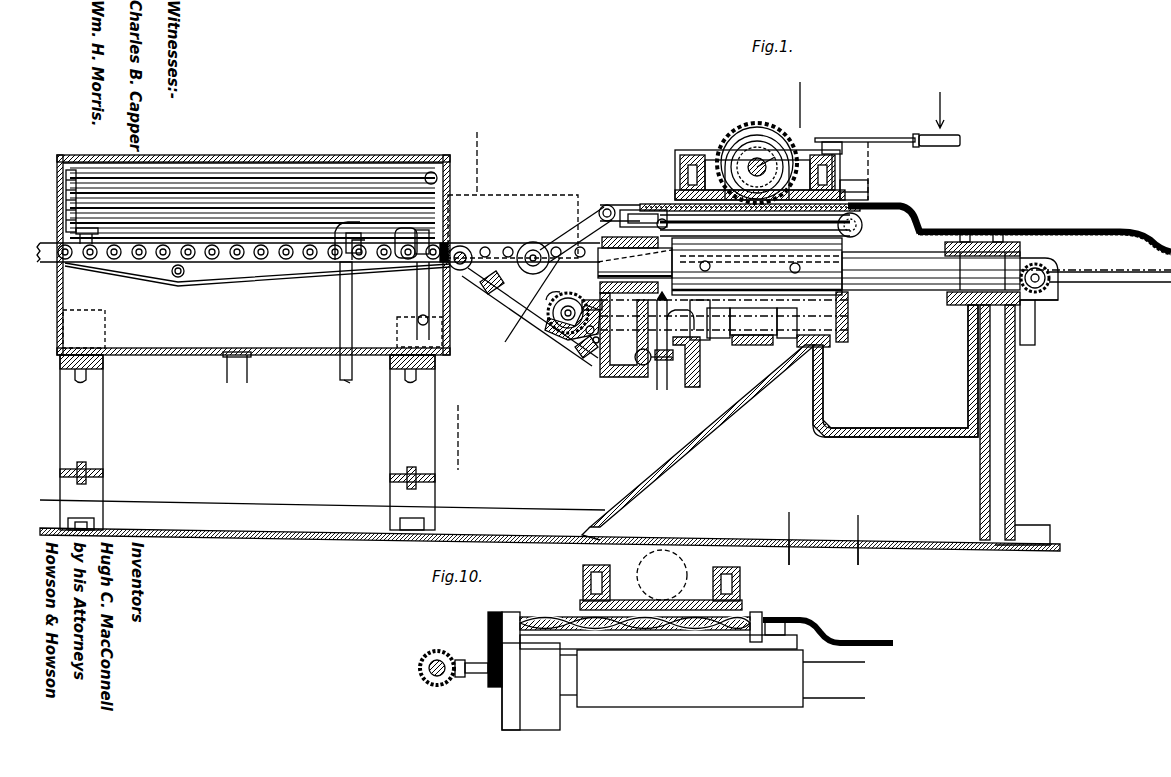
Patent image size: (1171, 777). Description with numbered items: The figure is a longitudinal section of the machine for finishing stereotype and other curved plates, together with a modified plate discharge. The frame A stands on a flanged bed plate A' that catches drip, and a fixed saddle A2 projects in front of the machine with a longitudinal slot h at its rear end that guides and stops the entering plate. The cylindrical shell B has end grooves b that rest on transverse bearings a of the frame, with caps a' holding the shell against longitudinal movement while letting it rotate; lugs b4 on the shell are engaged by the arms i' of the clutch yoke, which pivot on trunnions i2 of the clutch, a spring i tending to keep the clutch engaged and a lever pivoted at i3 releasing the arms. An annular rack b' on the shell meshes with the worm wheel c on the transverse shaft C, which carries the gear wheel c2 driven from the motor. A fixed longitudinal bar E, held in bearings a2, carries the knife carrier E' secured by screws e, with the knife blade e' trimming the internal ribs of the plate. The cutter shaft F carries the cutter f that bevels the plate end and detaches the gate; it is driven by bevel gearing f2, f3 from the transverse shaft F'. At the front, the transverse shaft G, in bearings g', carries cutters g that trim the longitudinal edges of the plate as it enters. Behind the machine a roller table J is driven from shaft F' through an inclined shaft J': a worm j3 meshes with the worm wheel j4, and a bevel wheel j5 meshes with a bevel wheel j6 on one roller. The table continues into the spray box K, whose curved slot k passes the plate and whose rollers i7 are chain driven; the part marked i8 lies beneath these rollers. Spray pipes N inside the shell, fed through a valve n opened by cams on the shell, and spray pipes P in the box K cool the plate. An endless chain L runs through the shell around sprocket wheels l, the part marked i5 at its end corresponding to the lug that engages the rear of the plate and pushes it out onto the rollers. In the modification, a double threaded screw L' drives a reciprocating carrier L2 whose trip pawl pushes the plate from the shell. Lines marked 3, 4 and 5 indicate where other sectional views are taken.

In FIG. 1, the frame A is at (555, 425).
In FIG. 1, the flanged bed plate A' is at (550, 525).
In FIG. 1, the fixed saddle A2 is at (1044, 229).
In FIG. 1, the cylindrical shell B is at (748, 175).
In FIG. 1, the transverse shaft C is at (790, 152).
In FIG. 1, the worm wheel c is at (760, 160).
In FIG. 1, the gear wheel c2 is at (740, 128).
In FIG. 1, the fixed longitudinal bar E is at (931, 271).
In FIG. 1, the knife carrier E' is at (720, 266).
In FIG. 1, the screws e is at (760, 257).
In FIG. 1, the knife blade e' is at (760, 262).
In FIG. 1, the cutter shaft F is at (698, 335).
In FIG. 1, the transverse shaft F' is at (559, 327).
In FIG. 1, the cutter f is at (743, 341).
In FIG. 1, the bevel gear f2 is at (594, 342).
In FIG. 1, the bevel gear f3 is at (568, 301).
In FIG. 1, the transverse shaft G is at (1030, 300).
In FIG. 1, the cutters g is at (1096, 281).
In FIG. 1, the bearings g' is at (1046, 321).
In FIG. 1, the longitudinal slot h is at (908, 212).
In FIG. 1, the spring i is at (319, 224).
In FIG. 1, the arms i' is at (531, 220).
In FIG. 1, the trunnions i2 is at (512, 283).
In FIG. 1, the pivot i3 is at (832, 142).
In FIG. 1, the roller i5 is at (766, 228).
In FIG. 1, the rollers i7 is at (135, 266).
In FIG. 1, the idler sprocket i8 is at (222, 275).
In FIG. 1, the roller table J is at (375, 322).
In FIG. 1, the inclined shaft J' is at (532, 300).
In FIG. 1, the worm j3 is at (550, 288).
In FIG. 1, the worm wheel j4 is at (575, 334).
In FIG. 1, the bevel wheel j5 is at (500, 250).
In FIG. 1, the bevel wheel j6 is at (462, 246).
In FIG. 1, the spray box K is at (253, 245).
In FIG. 1, the curved slot k is at (52, 168).
In FIG. 1, the endless chain L is at (620, 199).
In FIG. 10, the double threaded screw L' is at (642, 662).
In FIG. 1, the reciprocating carrier L2 is at (887, 119).
In FIG. 10, the reciprocating carrier L2 is at (755, 618).
In FIG. 1, the sprocket wheels l is at (886, 205).
In FIG. 1, the water spray pipes N is at (643, 219).
In FIG. 1, the valve n is at (654, 367).
In FIG. 1, the water spray pipes P is at (322, 162).
In FIG. 1, the transverse bearings a is at (715, 437).
In FIG. 1, the caps a' is at (756, 168).
In FIG. 10, the caps a' is at (660, 580).
In FIG. 1, the bearings a2 is at (810, 334).
In FIG. 1, the groove b is at (777, 262).
In FIG. 1, the annular rack b' is at (753, 338).
In FIG. 1, the lugs b4 is at (867, 182).
In FIG. 1, the section line 3 is at (862, 362).
In FIG. 10, the section line 3 is at (857, 563).
In FIG. 1, the section line 4 is at (794, 324).
In FIG. 10, the section line 4 is at (788, 562).
In FIG. 1, the section line 5 is at (466, 301).